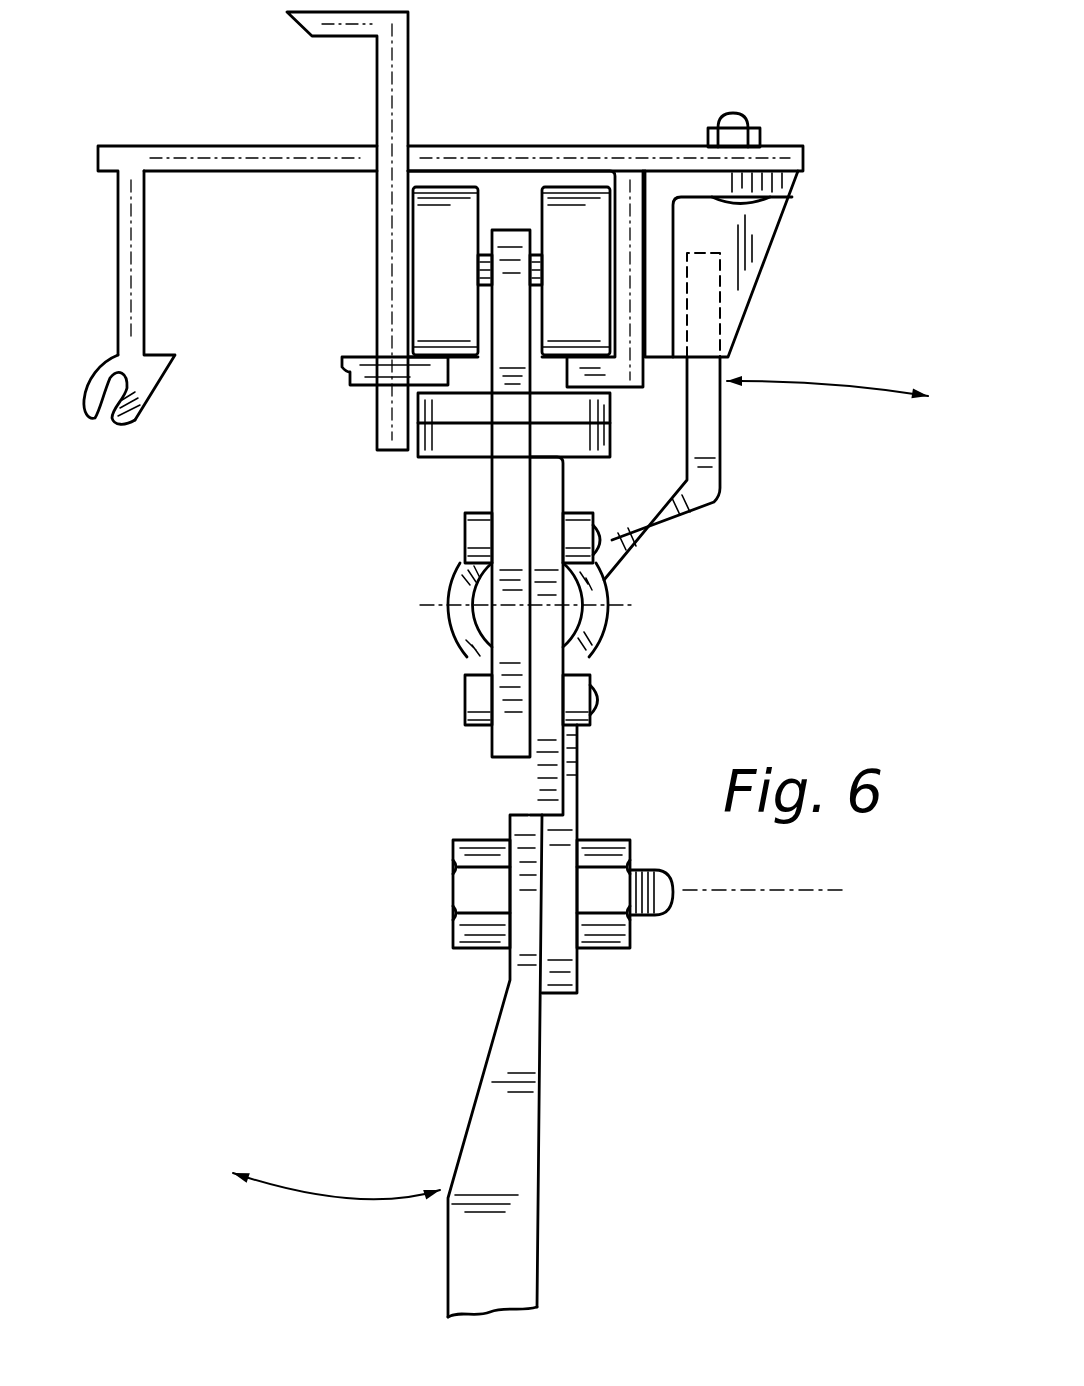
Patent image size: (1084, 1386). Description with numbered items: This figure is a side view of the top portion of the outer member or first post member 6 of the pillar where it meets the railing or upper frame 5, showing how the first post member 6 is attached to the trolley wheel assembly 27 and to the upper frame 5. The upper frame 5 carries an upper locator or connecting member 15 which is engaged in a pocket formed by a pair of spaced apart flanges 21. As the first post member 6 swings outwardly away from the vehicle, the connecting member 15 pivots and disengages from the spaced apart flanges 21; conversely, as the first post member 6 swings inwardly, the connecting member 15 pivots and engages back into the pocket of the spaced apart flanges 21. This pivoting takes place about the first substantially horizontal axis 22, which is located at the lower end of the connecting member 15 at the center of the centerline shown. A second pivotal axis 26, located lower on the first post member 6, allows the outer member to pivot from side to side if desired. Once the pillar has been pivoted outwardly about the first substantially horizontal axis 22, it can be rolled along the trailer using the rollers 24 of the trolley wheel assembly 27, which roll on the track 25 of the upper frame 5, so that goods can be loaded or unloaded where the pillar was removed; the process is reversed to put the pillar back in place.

The upper frame 5 is at (788, 321).
The first post member 6 is at (476, 1147).
The connecting member 15 is at (712, 447).
The spaced apart flanges 21 is at (770, 224).
The first substantially horizontal axis 22 is at (528, 607).
The rollers 24 is at (455, 205).
The track 25 is at (432, 378).
The second pivotal axis 26 is at (780, 890).
The trolley wheel assembly 27 is at (463, 462).